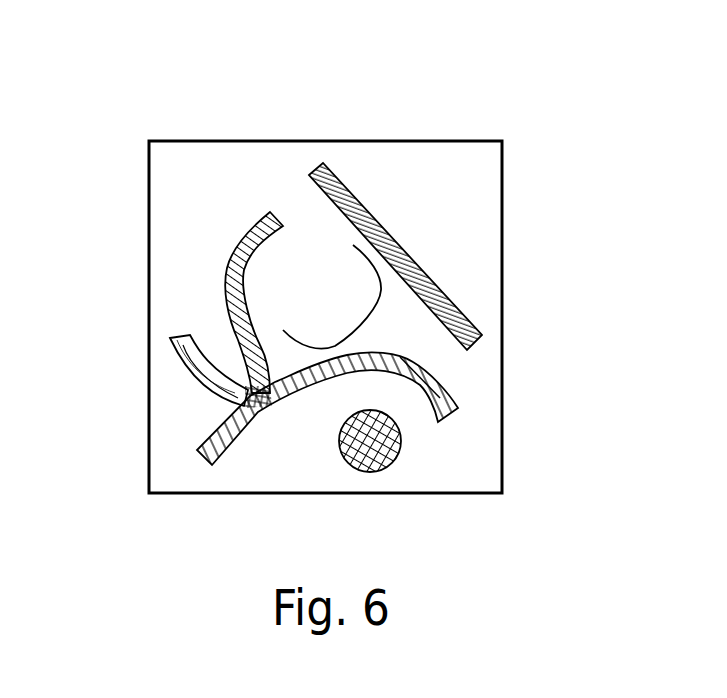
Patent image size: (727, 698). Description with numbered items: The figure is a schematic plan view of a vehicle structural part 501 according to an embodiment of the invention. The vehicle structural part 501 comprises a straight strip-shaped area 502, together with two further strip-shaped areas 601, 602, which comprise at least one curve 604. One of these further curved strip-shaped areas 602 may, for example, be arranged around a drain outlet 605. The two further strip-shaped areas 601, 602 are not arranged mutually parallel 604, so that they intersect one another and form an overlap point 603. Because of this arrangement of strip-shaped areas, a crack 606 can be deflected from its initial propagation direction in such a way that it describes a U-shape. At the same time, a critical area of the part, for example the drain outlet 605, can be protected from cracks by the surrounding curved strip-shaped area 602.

The vehicle structural part 501 is at (218, 153).
The straight strip-shaped area 502 is at (347, 183).
The further strip-shaped area 601 is at (235, 246).
The further curved strip-shaped area 602 is at (458, 405).
The overlap point 603 is at (262, 400).
The curve 604 is at (212, 283).
The drain outlet 605 is at (395, 446).
The crack 606 is at (363, 311).